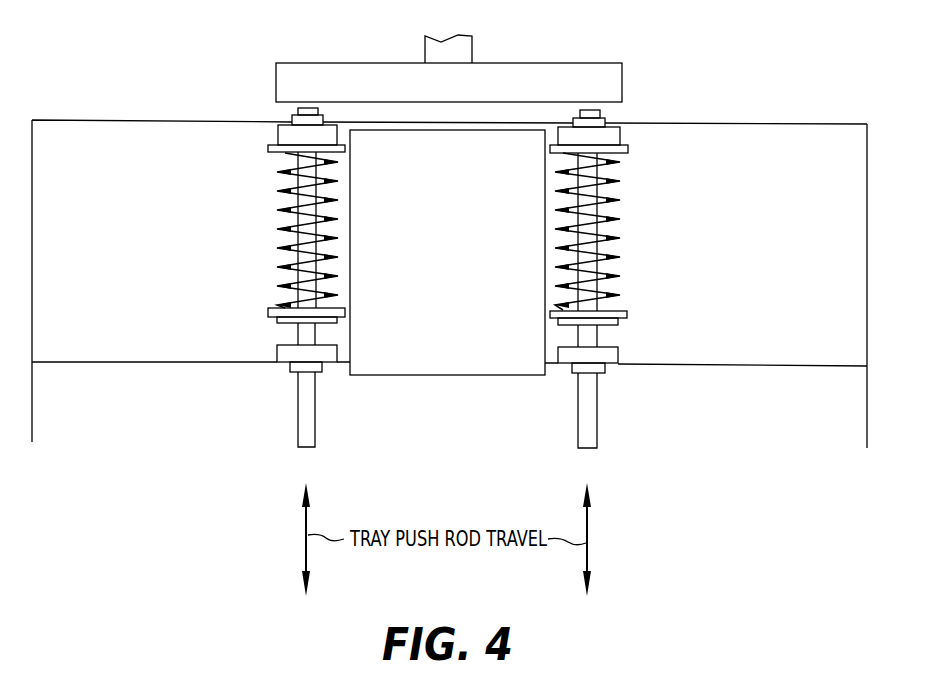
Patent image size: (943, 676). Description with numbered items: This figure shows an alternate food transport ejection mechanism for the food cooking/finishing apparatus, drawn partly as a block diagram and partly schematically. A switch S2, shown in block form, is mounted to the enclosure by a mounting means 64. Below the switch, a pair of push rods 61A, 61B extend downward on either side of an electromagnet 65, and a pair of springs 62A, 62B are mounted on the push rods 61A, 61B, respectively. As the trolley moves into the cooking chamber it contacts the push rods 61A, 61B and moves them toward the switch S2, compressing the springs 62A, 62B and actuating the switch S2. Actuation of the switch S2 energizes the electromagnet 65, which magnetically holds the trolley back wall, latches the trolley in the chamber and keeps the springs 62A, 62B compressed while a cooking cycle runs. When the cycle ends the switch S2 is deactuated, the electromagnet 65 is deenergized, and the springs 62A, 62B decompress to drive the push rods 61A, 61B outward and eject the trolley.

The switch S2 is at (602, 63).
The mounting means 64 is at (450, 48).
The electromagnet 65 is at (459, 265).
The spring 62A is at (277, 189).
The spring 62B is at (608, 218).
The push rod 61A is at (317, 430).
The push rod 61B is at (580, 422).